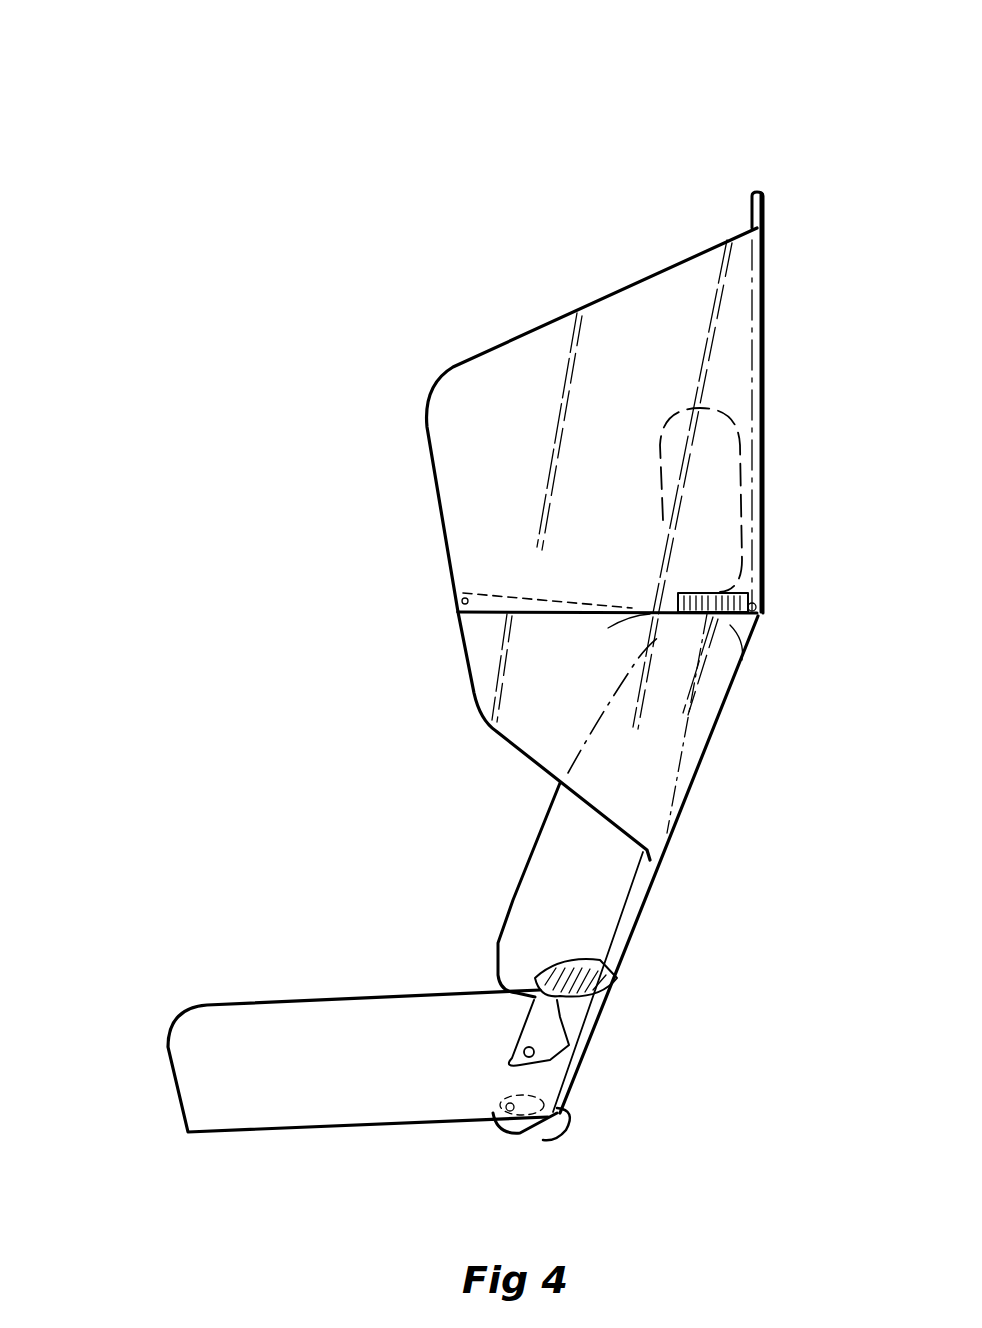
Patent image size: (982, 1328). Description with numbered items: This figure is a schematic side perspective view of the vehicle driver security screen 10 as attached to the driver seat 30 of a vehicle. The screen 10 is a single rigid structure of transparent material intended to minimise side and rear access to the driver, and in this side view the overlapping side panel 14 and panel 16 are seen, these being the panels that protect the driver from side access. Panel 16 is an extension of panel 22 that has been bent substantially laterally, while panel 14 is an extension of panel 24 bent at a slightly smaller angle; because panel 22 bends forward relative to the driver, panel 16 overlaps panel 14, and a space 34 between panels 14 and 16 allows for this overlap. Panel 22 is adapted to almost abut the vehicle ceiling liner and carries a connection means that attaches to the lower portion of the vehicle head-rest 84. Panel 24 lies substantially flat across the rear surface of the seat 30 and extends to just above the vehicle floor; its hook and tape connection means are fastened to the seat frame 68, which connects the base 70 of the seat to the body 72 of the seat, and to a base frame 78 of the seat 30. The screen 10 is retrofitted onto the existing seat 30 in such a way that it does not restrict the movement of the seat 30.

The vehicle driver security screen 10 is at (729, 136).
The panel 14 is at (490, 668).
The panel 16 is at (468, 400).
The panel 22 is at (763, 285).
The panel 24 is at (673, 835).
The vehicle seat 30 is at (145, 1084).
The space 34 is at (758, 618).
The seat frame 68 is at (543, 1017).
The base of the seat 70 is at (262, 1033).
The body of the seat 72 is at (543, 883).
The base frame 78 is at (493, 1117).
The vehicle head-rest 84 is at (712, 488).